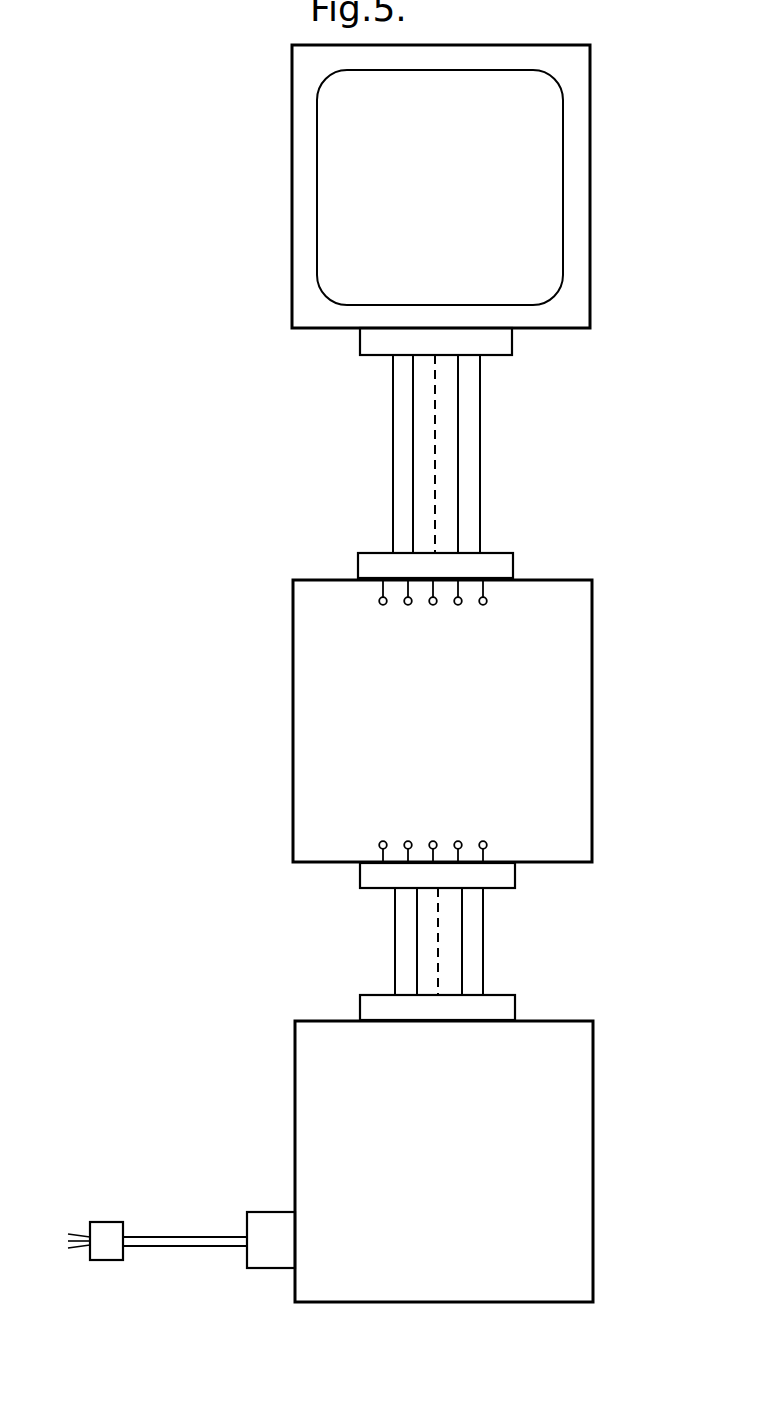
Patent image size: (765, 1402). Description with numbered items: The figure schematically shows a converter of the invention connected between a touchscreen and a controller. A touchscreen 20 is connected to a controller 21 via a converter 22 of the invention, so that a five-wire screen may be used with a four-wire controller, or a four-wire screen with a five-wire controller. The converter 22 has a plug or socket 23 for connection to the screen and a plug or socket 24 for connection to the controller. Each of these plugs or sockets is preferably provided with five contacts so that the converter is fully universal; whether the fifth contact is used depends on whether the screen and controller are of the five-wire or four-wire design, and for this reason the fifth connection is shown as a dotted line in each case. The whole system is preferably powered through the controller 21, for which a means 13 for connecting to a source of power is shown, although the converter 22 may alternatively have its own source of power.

The touchscreen 20 is at (481, 200).
The controller 21 is at (461, 1161).
The converter 22 is at (483, 721).
The plug or socket 23 is at (514, 570).
The plug or socket 24 is at (515, 872).
The means for connecting to a source of power 13 is at (104, 1220).